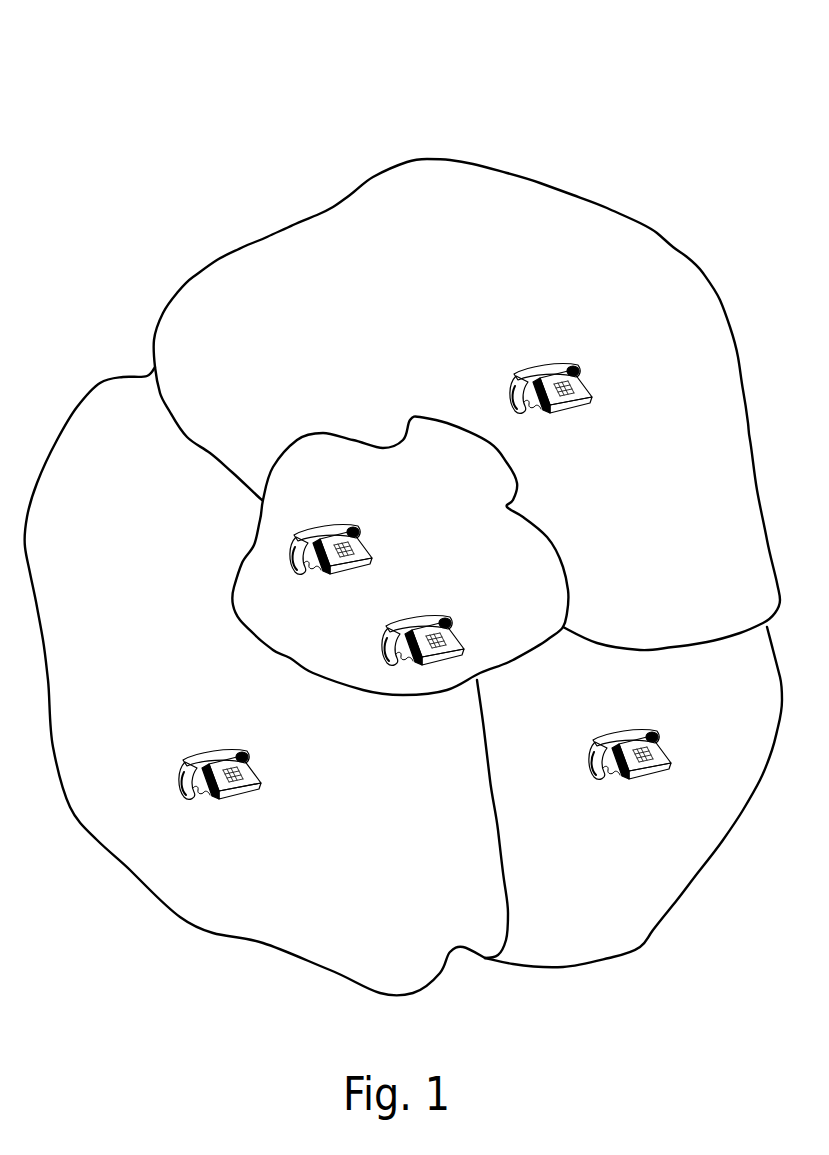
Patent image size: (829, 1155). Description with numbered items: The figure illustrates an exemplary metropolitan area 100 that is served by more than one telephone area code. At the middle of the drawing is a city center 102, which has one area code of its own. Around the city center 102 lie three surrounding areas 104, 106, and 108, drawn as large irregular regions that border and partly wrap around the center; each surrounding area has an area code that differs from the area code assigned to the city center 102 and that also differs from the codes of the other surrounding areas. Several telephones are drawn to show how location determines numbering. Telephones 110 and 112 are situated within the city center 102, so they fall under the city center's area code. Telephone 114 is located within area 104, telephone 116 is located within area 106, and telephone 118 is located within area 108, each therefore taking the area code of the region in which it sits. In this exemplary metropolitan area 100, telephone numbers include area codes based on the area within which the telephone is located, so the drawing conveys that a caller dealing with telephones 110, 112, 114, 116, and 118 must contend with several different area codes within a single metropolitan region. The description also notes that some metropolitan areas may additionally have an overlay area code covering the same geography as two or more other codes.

The metropolitan area 100 is at (661, 72).
The city center 102 is at (441, 518).
The surrounding area 104 is at (683, 255).
The surrounding area 106 is at (633, 948).
The surrounding area 108 is at (147, 887).
The telephone 110 is at (452, 632).
The telephone 112 is at (343, 522).
The telephone 114 is at (590, 381).
The telephone 116 is at (657, 736).
The telephone 118 is at (257, 766).